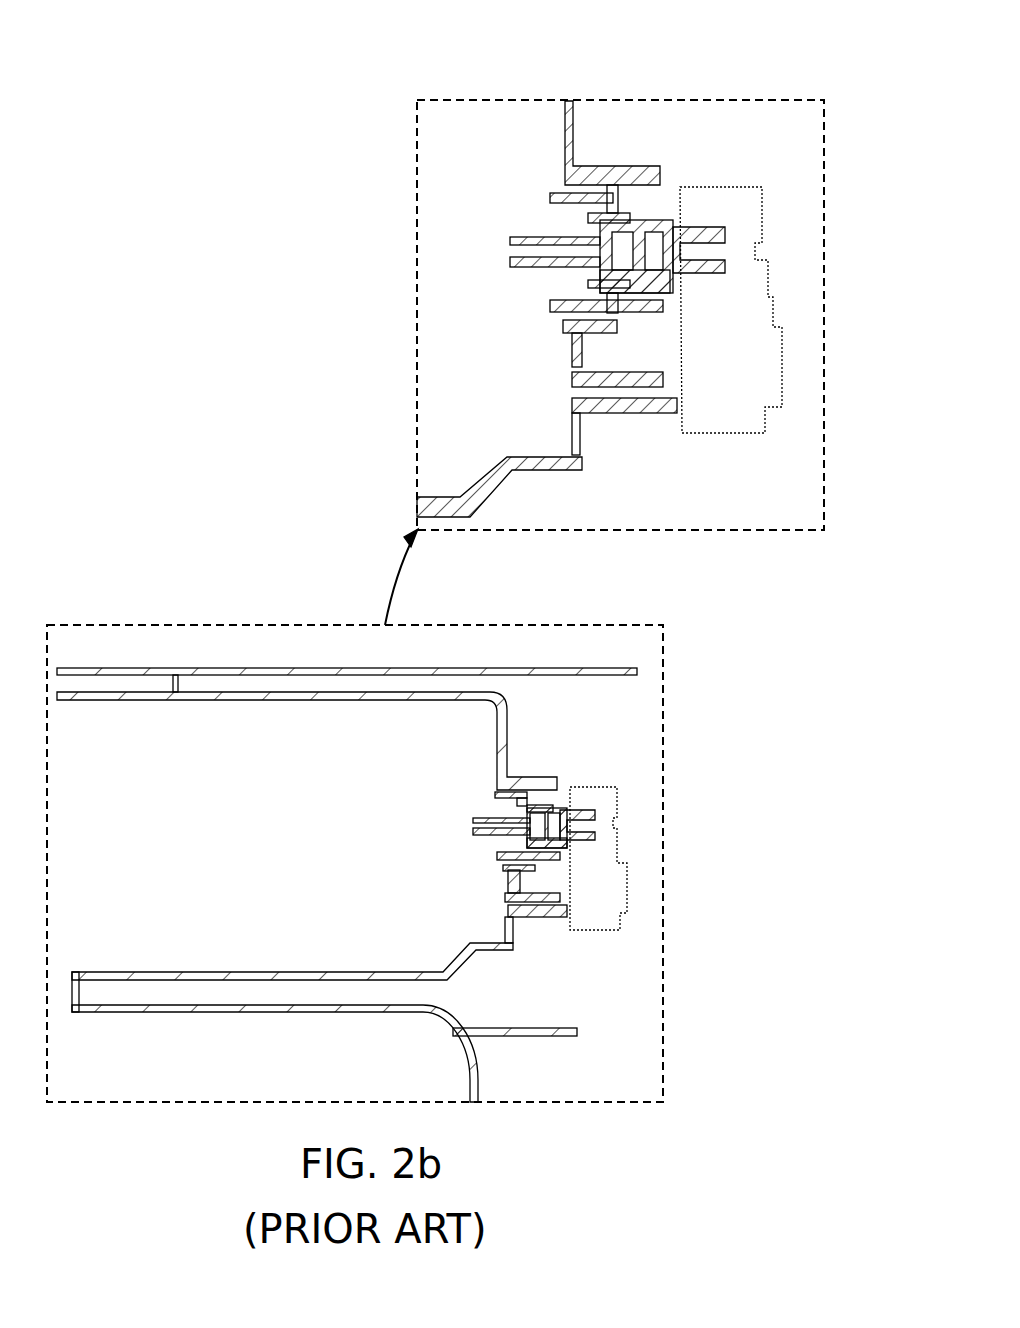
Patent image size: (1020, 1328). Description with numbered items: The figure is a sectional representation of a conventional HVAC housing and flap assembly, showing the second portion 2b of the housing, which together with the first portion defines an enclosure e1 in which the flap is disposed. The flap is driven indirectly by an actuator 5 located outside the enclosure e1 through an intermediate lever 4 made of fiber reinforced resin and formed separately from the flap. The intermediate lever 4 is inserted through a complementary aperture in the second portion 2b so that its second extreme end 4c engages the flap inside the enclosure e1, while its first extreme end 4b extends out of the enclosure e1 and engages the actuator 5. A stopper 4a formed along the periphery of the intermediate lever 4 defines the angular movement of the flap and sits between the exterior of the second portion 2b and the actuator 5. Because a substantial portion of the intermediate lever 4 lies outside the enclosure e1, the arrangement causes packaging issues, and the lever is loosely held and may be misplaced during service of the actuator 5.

The second portion of the housing 2b is at (565, 147).
The intermediate lever 4 is at (667, 227).
The stopper 4a is at (650, 287).
The first extreme end of the intermediate lever 4b is at (703, 237).
The second extreme end of the intermediate lever 4c is at (510, 238).
The actuator 5 is at (738, 203).
The enclosure e1 is at (550, 428).